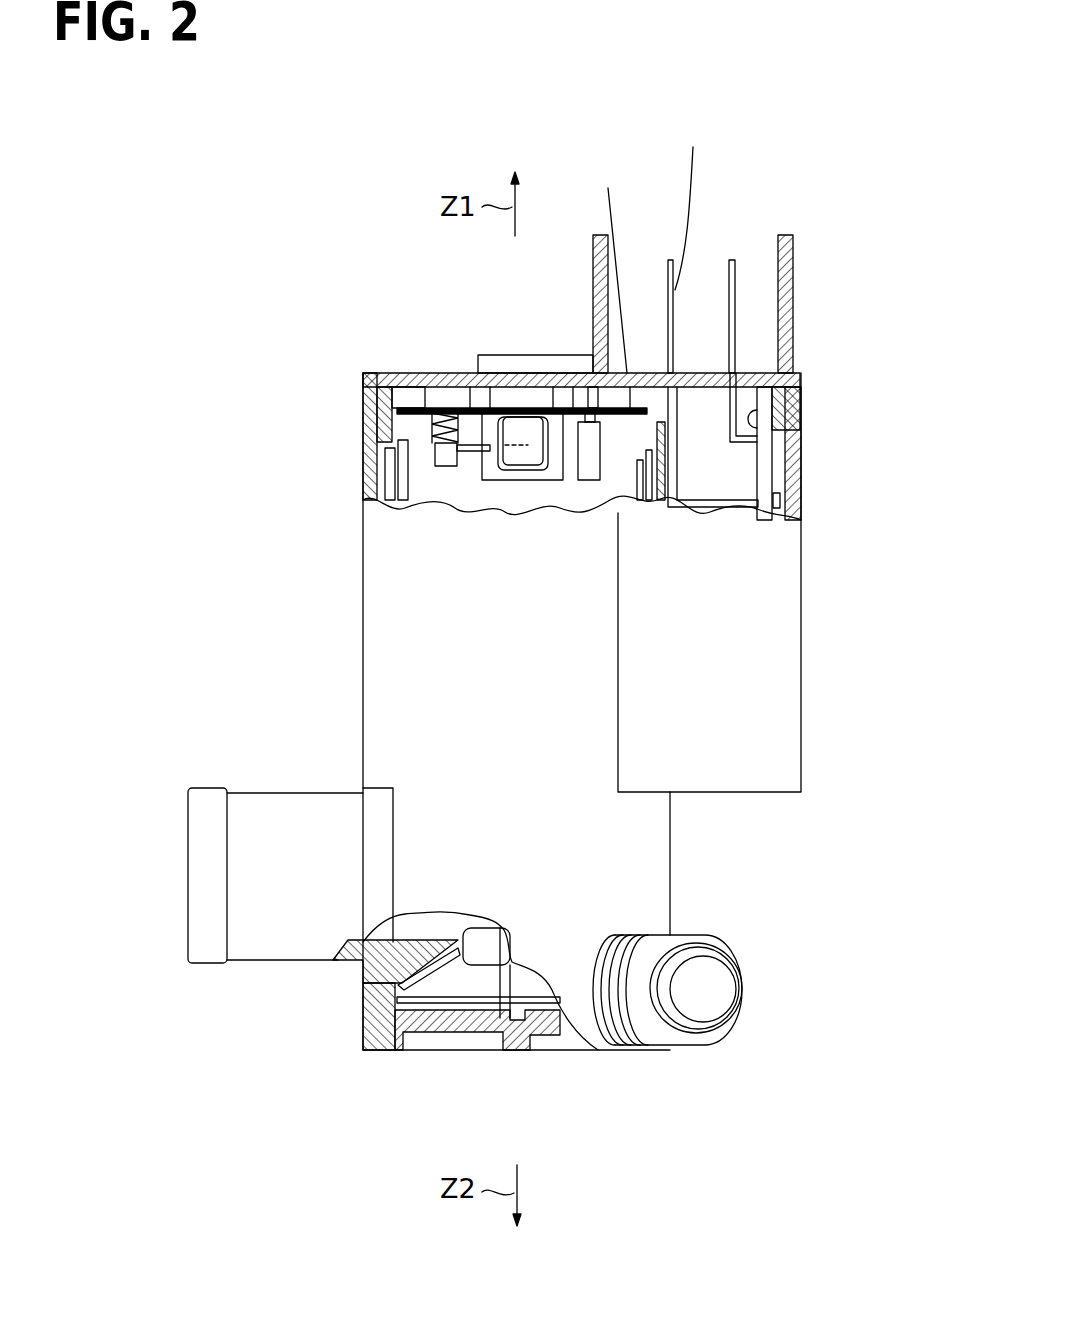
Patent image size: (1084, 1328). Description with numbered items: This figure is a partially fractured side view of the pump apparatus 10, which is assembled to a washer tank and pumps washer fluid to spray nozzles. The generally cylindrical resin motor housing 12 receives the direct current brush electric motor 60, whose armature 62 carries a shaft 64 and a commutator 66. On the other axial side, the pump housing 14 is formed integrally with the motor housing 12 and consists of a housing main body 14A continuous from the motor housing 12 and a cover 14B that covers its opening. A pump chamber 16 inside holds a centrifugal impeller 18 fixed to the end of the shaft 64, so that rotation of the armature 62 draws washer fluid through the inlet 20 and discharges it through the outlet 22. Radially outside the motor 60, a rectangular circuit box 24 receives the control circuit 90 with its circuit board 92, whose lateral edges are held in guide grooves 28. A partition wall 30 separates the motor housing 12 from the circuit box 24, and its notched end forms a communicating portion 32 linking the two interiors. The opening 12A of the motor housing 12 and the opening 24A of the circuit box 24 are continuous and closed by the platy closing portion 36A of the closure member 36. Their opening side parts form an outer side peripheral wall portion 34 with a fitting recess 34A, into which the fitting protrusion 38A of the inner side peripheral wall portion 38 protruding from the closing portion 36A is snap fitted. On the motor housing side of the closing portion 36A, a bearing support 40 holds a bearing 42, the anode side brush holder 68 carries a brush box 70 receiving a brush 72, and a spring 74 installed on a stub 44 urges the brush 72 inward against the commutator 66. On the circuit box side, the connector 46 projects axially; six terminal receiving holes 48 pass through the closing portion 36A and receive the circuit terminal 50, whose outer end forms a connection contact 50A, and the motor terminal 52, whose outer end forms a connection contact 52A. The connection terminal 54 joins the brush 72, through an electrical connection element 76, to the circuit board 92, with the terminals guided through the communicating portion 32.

The pump apparatus 10 is at (207, 412).
The motor housing 12 is at (363, 644).
The opening 12A is at (370, 373).
The pump housing 14 is at (282, 1023).
The housing main body 14A is at (362, 1013).
The cover 14B is at (390, 1052).
The pump chamber 16 is at (407, 992).
The impeller 18 is at (367, 963).
The inlet 20 is at (287, 793).
The outlet 22 is at (744, 988).
The circuit box 24 is at (803, 688).
The opening 24A is at (800, 373).
The guide grooves 28 is at (767, 373).
The partition wall 30 is at (663, 472).
The communicating portion 32 is at (665, 405).
The outer side peripheral wall portion 34 is at (363, 438).
The fitting recess 34A is at (365, 410).
The closure member 36 is at (457, 373).
The closing portion 36A is at (497, 373).
The inner side peripheral wall portion 38 is at (390, 373).
The fitting protrusion 38A is at (368, 414).
The bearing support 40 is at (535, 372).
The bearing 42 is at (588, 373).
The stub 44 is at (448, 467).
The connector 46 is at (795, 274).
The terminal receiving holes 48 is at (668, 300).
The circuit terminal 50 is at (775, 450).
The connection contact 50A is at (740, 335).
The motor terminal 52 is at (617, 280).
The connection contact 52A is at (675, 290).
The connection terminal 54 is at (627, 373).
The electric motor 60 is at (433, 480).
The armature 62 is at (545, 493).
The shaft 64 is at (520, 1052).
The commutator 66 is at (483, 470).
The brush holder 68 is at (428, 373).
The brush box 70 is at (522, 466).
The brush 72 is at (540, 437).
The spring 74 is at (375, 479).
The electrical connection element 76 is at (640, 462).
The control circuit 90 is at (777, 490).
The circuit board 92 is at (772, 416).